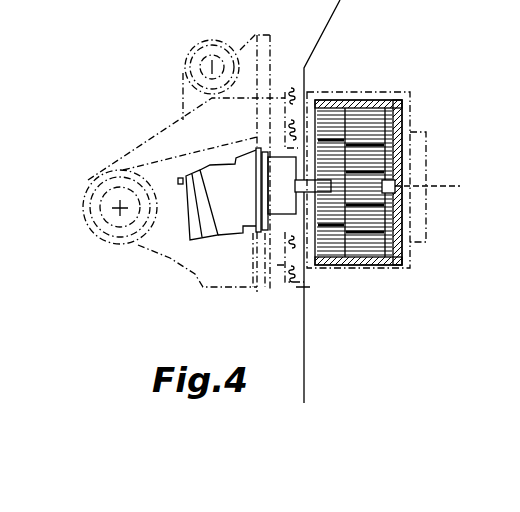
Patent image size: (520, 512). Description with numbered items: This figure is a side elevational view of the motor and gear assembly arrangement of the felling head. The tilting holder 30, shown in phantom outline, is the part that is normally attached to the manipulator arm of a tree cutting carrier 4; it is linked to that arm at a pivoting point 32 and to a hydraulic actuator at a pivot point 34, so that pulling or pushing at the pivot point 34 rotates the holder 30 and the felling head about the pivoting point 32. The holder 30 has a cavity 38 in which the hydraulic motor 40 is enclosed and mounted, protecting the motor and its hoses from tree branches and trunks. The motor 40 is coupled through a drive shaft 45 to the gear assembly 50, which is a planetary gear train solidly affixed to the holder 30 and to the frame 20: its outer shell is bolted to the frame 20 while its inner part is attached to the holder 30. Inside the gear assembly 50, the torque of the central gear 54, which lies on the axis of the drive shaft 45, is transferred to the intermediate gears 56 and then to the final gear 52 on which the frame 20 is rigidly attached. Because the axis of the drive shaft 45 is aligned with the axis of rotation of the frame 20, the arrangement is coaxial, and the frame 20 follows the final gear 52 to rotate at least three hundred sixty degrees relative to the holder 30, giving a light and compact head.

The frame 20 is at (317, 33).
The tilting holder 30 is at (135, 147).
The pivoting point 32 is at (110, 250).
The pivot point 34 is at (200, 67).
The cavity 38 is at (195, 272).
The hydraulic motor 40 is at (246, 200).
The drive shaft 45 is at (318, 196).
The gear assembly 50 is at (398, 98).
The final gear 52 is at (362, 247).
The central gear 54 is at (371, 170).
The intermediate gears 56 is at (356, 116).
The tree cutting carrier 4 is at (465, 180).